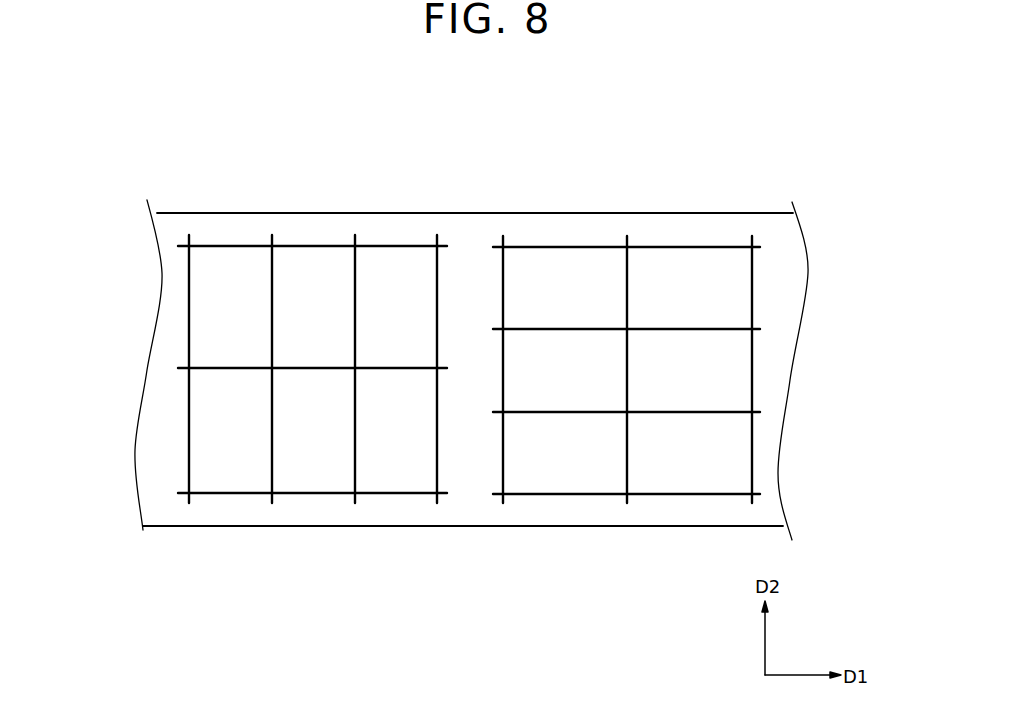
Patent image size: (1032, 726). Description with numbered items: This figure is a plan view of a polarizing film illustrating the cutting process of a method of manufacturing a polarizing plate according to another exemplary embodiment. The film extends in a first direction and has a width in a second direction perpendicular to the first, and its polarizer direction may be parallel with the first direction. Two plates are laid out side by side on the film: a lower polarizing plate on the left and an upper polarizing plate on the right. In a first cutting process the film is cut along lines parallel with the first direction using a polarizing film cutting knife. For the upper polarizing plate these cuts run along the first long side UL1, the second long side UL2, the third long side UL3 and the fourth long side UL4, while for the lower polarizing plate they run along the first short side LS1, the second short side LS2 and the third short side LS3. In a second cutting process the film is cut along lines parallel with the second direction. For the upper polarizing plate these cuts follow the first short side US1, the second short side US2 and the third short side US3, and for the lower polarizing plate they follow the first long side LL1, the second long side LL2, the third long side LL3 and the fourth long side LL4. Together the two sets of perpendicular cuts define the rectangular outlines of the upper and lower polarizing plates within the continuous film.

The first short side LS1 is at (312, 245).
The second short side LS2 is at (293, 369).
The third short side LS3 is at (337, 493).
The first long side LL1 is at (436, 343).
The second long side LL2 is at (355, 316).
The third long side LL3 is at (272, 291).
The fourth long side LL4 is at (189, 262).
The first long side UL1 is at (662, 247).
The second long side UL2 is at (716, 329).
The third long side UL3 is at (655, 412).
The fourth long side UL4 is at (707, 494).
The first short side US1 is at (752, 370).
The second short side US2 is at (625, 387).
The third short side US3 is at (502, 387).